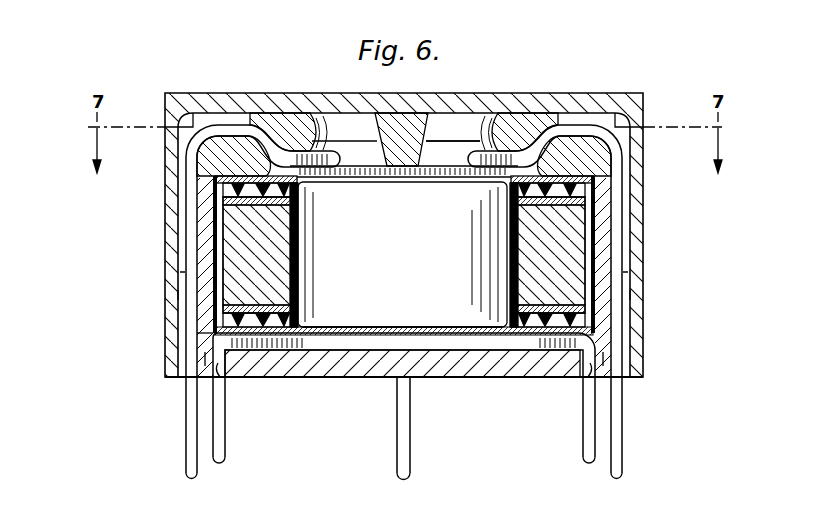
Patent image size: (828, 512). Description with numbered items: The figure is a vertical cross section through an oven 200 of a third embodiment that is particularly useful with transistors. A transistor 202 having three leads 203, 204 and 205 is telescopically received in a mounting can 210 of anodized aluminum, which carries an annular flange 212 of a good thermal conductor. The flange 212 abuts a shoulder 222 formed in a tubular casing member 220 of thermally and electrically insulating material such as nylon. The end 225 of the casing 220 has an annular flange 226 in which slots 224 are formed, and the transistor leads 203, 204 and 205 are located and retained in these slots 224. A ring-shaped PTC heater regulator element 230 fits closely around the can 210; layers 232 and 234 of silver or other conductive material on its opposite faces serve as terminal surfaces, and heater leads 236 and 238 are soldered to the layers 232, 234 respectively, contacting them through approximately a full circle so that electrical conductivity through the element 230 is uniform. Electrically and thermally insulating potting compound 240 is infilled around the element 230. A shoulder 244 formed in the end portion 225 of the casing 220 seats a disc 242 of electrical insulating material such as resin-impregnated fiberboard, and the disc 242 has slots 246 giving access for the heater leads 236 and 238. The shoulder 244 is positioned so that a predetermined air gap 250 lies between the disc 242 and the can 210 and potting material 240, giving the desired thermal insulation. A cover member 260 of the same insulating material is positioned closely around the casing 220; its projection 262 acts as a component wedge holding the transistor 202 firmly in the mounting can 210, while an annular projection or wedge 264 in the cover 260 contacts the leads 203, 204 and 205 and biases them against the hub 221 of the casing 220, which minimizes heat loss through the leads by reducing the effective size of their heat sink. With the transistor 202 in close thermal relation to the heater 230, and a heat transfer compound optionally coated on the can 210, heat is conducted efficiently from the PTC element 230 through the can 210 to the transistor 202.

The oven 200 is at (660, 46).
The transistor 202 is at (420, 261).
The transistor lead 203 is at (230, 127).
The transistor lead 204 is at (410, 444).
The transistor lead 205 is at (587, 130).
The mounting can 210 is at (402, 327).
The annular flange 212 is at (230, 178).
The tubular casing member 220 is at (198, 238).
The hub 221 is at (590, 147).
The shoulder 222 is at (600, 185).
The slot 224 is at (177, 298).
The casing end 225 is at (198, 337).
The annular flange 226 is at (180, 278).
The PTC heater regulator element 230 is at (280, 265).
The conductive layer 232 is at (298, 200).
The conductive layer 234 is at (282, 307).
The PTC heater lead 236 is at (225, 444).
The PTC heater lead 238 is at (580, 444).
The potting compound 240 is at (250, 335).
The disc 242 is at (332, 360).
The shoulder 244 is at (205, 358).
The slot 246 is at (222, 367).
The air gap 250 is at (468, 343).
The cover member 260 is at (337, 93).
The projection 262 is at (422, 153).
The annular projection 264 is at (517, 120).